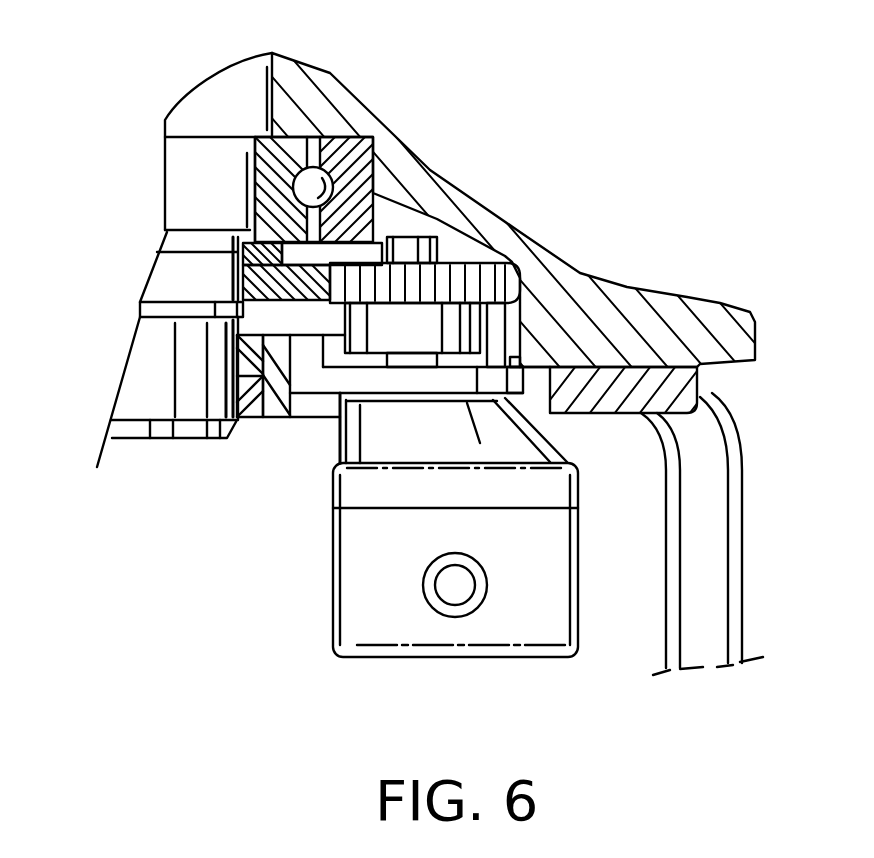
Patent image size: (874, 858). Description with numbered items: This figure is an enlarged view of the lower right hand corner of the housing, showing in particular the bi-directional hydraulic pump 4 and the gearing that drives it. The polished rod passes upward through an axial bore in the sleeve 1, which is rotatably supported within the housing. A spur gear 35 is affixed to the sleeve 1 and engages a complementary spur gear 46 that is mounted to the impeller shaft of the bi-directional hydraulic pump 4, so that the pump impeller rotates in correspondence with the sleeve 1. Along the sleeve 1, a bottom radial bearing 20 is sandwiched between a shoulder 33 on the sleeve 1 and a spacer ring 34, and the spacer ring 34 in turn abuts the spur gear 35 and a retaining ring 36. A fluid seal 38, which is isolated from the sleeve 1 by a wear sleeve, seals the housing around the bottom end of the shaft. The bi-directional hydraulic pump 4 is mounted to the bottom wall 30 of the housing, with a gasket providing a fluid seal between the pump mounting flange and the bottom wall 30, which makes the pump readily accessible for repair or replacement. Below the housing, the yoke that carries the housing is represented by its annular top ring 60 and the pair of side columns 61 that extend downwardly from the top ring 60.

The sleeve 1 is at (148, 405).
The bi-directional hydraulic pump 4 is at (360, 627).
The bottom radial bearing 20 is at (350, 150).
The bottom wall 30 is at (280, 417).
The shoulder 33 is at (203, 133).
The spacer ring 34 is at (247, 242).
The spur gear 35 is at (237, 282).
The retaining ring 36 is at (167, 310).
The fluid seal 38 is at (247, 420).
The complementary spur gear 46 is at (472, 262).
The top ring 60 is at (700, 385).
The side columns 61 is at (700, 575).